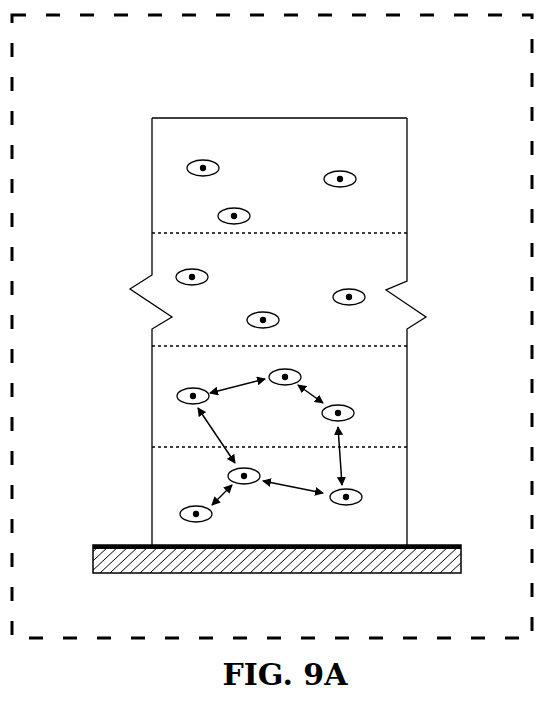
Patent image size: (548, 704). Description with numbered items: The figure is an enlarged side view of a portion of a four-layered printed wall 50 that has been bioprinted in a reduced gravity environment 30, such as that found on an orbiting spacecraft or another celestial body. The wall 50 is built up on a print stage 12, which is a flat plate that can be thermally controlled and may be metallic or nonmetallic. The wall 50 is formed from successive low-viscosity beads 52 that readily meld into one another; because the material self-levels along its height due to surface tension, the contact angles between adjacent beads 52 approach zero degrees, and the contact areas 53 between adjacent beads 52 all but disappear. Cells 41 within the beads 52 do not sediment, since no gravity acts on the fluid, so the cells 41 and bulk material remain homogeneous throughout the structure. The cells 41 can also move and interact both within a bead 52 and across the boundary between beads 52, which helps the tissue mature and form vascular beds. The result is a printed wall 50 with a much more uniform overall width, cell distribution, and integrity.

The print stage 12 is at (175, 574).
The reduced gravity environment 30 is at (152, 639).
The cells 41 is at (219, 166).
The printed wall 50 is at (176, 101).
The beads 52 is at (163, 155).
The contact areas 53 is at (178, 232).